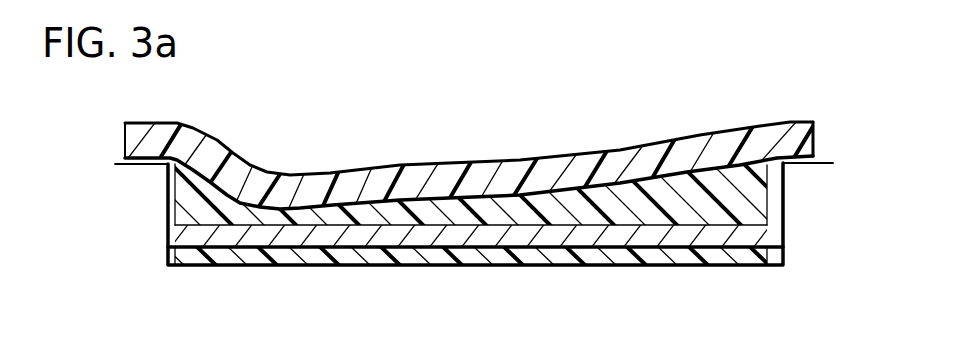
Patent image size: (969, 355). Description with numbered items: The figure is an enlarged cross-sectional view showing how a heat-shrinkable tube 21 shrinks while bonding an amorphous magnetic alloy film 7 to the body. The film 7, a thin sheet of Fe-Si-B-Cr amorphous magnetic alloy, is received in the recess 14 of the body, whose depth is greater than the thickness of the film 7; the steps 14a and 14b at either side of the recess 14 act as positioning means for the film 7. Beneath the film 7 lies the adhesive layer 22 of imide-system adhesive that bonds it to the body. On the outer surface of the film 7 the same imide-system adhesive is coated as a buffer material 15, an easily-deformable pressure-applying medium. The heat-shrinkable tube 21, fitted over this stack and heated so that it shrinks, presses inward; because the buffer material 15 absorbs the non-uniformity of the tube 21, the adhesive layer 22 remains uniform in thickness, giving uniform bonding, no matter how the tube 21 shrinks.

The heat-shrinkable tube 21 is at (385, 178).
The buffer material 15 is at (617, 192).
The amorphous magnetic alloy film 7 is at (595, 237).
The adhesive layer 22 is at (333, 258).
The recess 14 is at (428, 265).
The step 14a is at (167, 212).
The step 14b is at (786, 186).